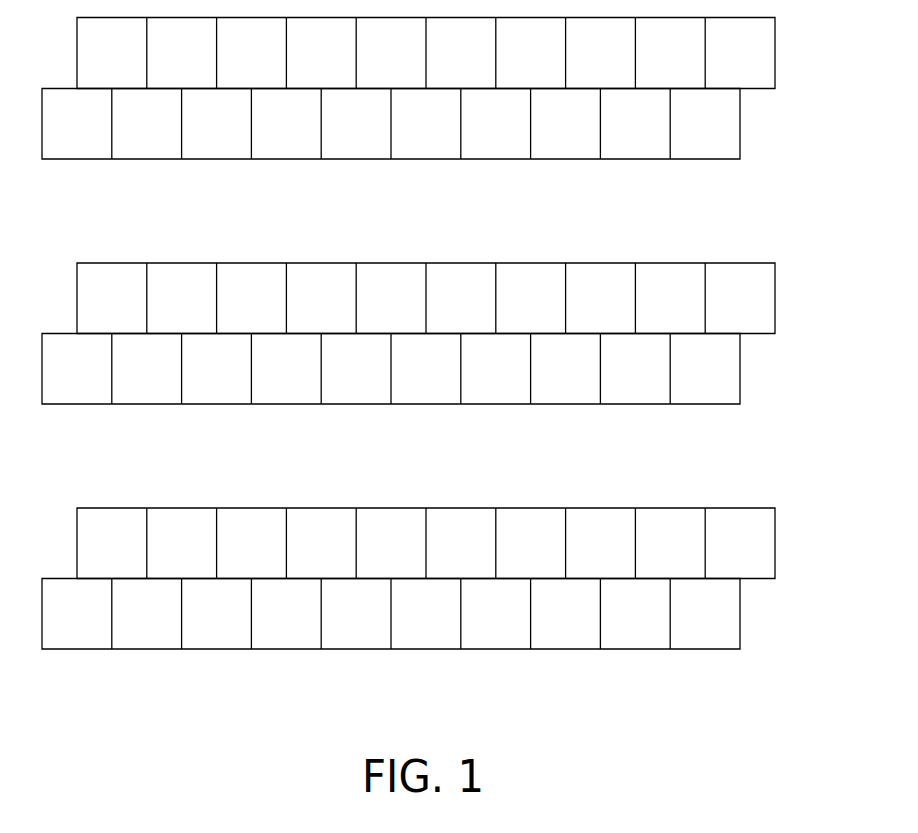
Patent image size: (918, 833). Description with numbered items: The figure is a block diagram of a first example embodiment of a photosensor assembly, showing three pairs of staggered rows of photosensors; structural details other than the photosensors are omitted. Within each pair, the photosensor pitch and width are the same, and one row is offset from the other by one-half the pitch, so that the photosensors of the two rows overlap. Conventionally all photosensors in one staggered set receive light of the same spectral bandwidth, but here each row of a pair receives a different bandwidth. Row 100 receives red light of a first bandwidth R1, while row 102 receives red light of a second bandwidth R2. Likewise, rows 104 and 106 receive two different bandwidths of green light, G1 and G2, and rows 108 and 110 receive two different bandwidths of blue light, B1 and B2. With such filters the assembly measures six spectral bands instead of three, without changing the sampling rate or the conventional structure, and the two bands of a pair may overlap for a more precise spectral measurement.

The row of photosensors 100 is at (778, 52).
The row of photosensors 102 is at (744, 138).
The row of photosensors 104 is at (778, 298).
The row of photosensors 106 is at (744, 384).
The row of photosensors 108 is at (778, 543).
The row of photosensors 110 is at (744, 628).